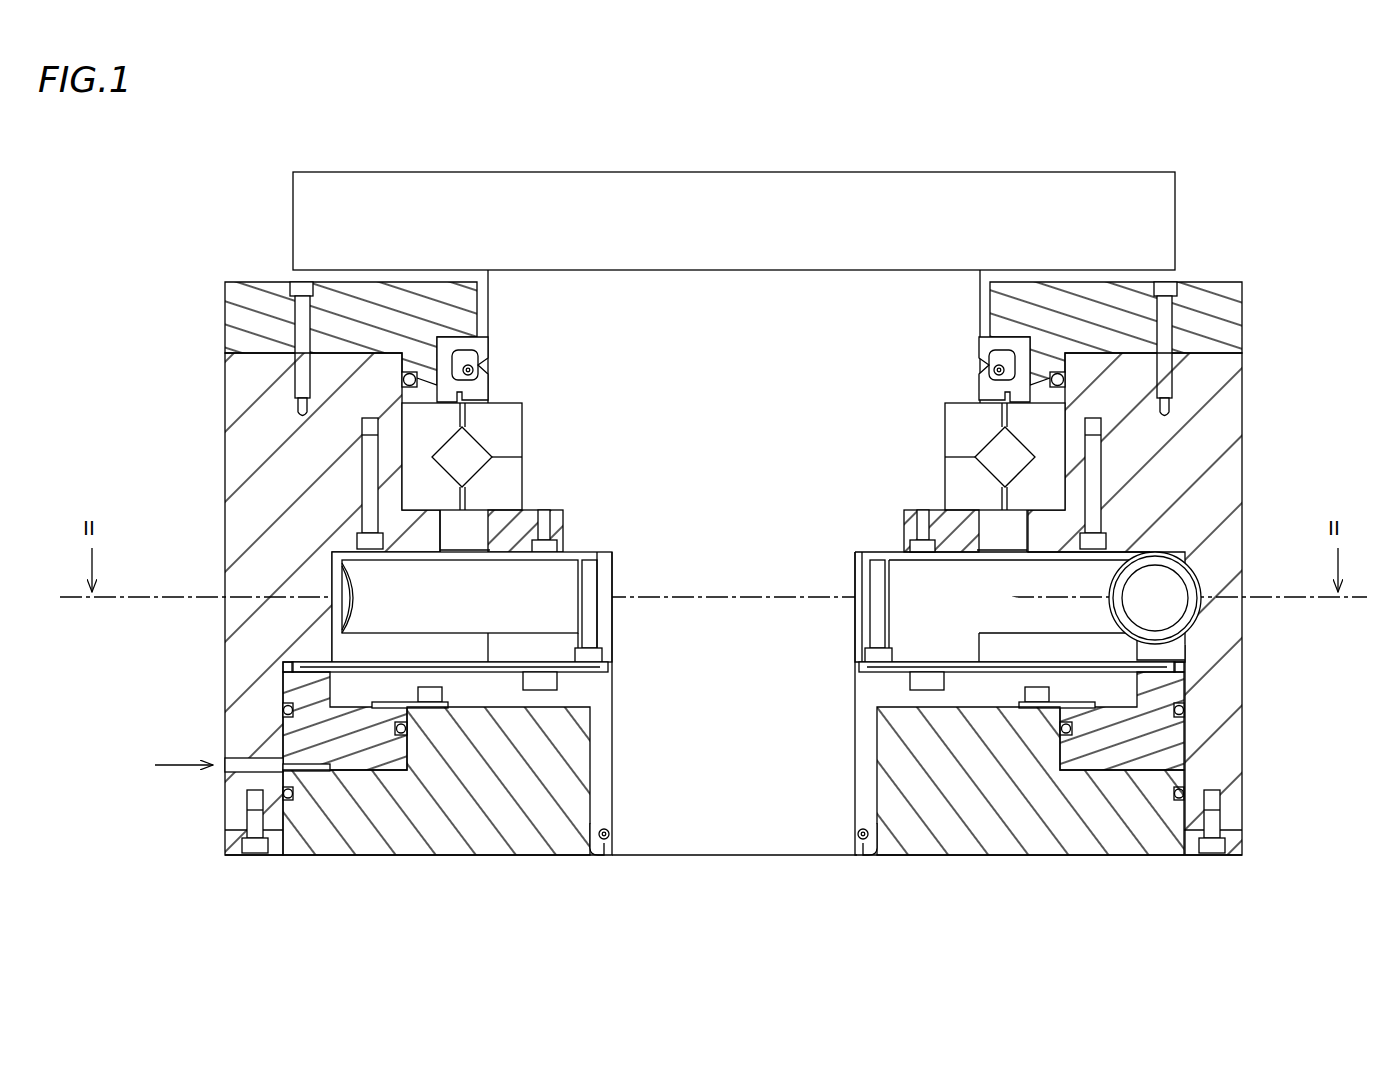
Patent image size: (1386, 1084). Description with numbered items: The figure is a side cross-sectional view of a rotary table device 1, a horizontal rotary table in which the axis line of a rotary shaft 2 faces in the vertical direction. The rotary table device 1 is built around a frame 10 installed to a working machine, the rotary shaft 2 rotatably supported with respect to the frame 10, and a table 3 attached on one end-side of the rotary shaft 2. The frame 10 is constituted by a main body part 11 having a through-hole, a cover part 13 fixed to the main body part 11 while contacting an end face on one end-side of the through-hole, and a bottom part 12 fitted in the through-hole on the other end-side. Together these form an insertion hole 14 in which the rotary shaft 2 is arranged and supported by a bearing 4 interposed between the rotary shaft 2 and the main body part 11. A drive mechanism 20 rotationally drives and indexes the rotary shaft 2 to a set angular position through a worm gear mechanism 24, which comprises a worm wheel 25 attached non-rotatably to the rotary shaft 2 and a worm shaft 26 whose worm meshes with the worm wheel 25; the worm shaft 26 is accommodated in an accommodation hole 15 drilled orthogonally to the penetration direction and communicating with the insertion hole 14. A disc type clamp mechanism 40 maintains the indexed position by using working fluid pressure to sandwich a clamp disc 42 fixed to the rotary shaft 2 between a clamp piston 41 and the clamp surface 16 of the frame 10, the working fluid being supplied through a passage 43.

The rotary table device 1 is at (1213, 180).
The rotary shaft 2 is at (783, 315).
The table 3 is at (1047, 192).
The bearing 4 is at (417, 482).
The frame 10 is at (205, 255).
The main body part 11 is at (242, 413).
The bottom part 12 is at (1005, 830).
The cover part 13 is at (235, 333).
The insertion hole 14 is at (410, 445).
The accommodation hole 15 is at (1205, 608).
The clamp surface 16 is at (312, 660).
The drive mechanism 20 is at (1265, 418).
The worm gear mechanism 24 is at (1172, 543).
The worm wheel 25 is at (918, 608).
The worm shaft 26 is at (1167, 583).
The clamp mechanism 40 is at (327, 778).
The clamp piston 41 is at (373, 740).
The clamp disc 42 is at (455, 667).
The working fluid passage 43 is at (297, 767).